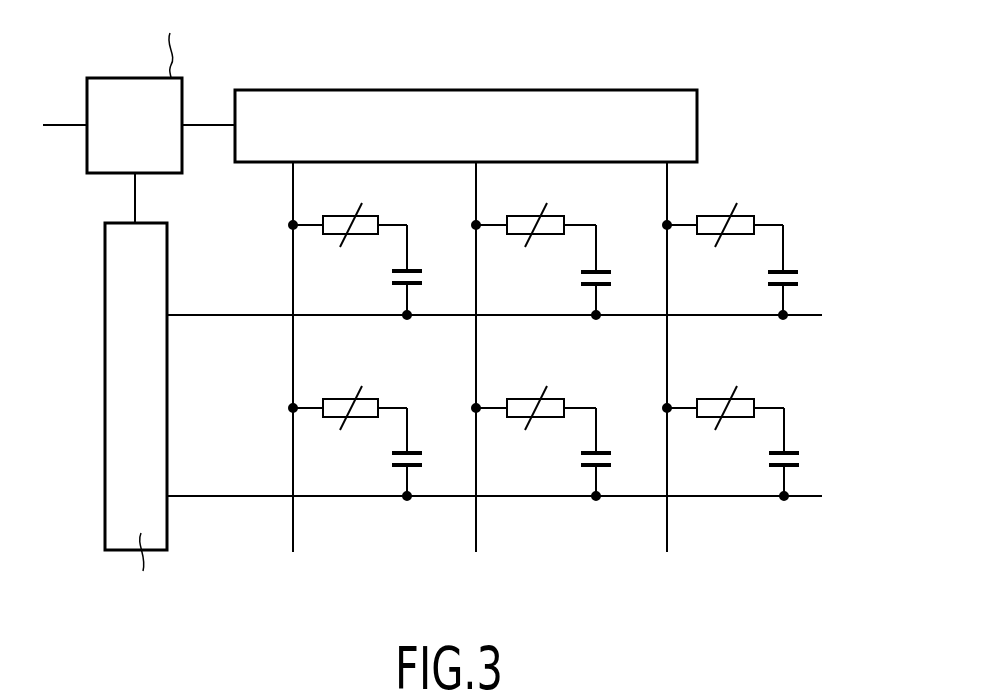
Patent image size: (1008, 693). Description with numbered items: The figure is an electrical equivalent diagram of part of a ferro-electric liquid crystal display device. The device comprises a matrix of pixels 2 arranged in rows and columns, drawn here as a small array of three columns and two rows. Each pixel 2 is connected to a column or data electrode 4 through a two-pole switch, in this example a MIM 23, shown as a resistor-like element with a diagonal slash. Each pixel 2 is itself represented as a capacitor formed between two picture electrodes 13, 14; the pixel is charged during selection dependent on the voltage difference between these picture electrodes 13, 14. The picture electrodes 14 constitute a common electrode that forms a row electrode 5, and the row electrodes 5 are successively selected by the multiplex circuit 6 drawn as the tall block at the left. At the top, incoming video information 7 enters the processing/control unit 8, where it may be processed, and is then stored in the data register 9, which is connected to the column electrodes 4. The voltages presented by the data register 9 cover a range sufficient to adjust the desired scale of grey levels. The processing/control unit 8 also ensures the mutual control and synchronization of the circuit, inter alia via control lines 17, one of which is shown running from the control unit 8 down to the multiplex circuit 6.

The pixel 2 is at (409, 270).
The column electrode 4 is at (293, 182).
The row electrode 5 is at (222, 313).
The multiplex circuit 6 is at (105, 297).
The incoming video information 7 is at (63, 124).
The processing/control unit 8 is at (145, 77).
The data register 9 is at (287, 86).
The picture electrode 13 is at (417, 269).
The picture electrode 14 is at (398, 287).
The control line 17 is at (135, 200).
The MIM 23 is at (362, 212).